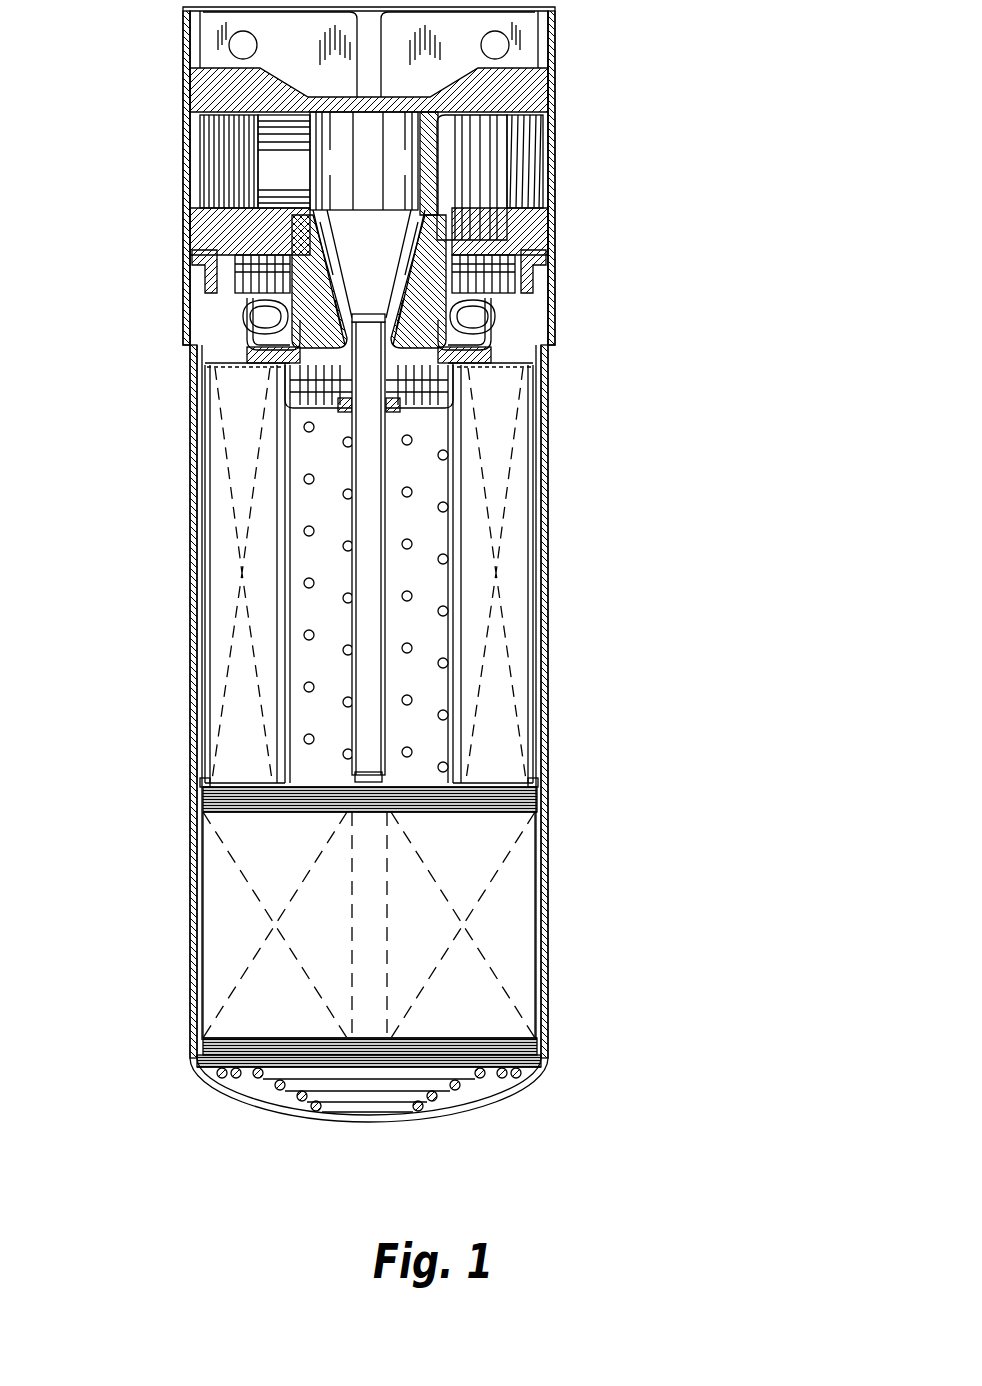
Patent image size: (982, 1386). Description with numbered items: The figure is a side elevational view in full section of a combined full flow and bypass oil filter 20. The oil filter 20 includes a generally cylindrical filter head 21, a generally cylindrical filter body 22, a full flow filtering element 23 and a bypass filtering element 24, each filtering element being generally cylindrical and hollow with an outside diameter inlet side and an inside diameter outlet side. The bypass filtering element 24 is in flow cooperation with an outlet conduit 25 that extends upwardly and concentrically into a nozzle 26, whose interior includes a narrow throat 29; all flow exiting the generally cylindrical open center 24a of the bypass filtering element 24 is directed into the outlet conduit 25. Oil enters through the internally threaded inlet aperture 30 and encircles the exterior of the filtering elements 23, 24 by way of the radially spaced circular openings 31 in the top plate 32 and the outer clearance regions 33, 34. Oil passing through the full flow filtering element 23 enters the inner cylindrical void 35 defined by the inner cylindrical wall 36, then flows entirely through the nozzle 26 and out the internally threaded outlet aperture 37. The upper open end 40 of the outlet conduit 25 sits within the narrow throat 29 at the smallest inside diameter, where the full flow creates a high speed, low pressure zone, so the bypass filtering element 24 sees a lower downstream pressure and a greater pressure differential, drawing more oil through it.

The combined full flow and bypass oil filter 20 is at (437, 564).
The filter head 21 is at (586, 247).
The filter body 22 is at (395, 733).
The full flow filtering element 23 is at (372, 575).
The bypass filtering element 24 is at (358, 925).
The generally cylindrical open center 24a is at (360, 848).
The outlet conduit 25 is at (371, 548).
The nozzle 26 is at (359, 250).
The narrow throat 29 is at (386, 293).
The internally threaded inlet aperture 30 is at (558, 168).
The circular openings 31 is at (273, 307).
The top plate 32 is at (540, 333).
The outer clearance region 33 is at (200, 685).
The outer clearance region 34 is at (193, 935).
The inner cylindrical void 35 is at (292, 543).
The inner cylindrical wall 36 is at (250, 640).
The internally threaded outlet aperture 37 is at (193, 170).
The upper open end 40 is at (377, 318).